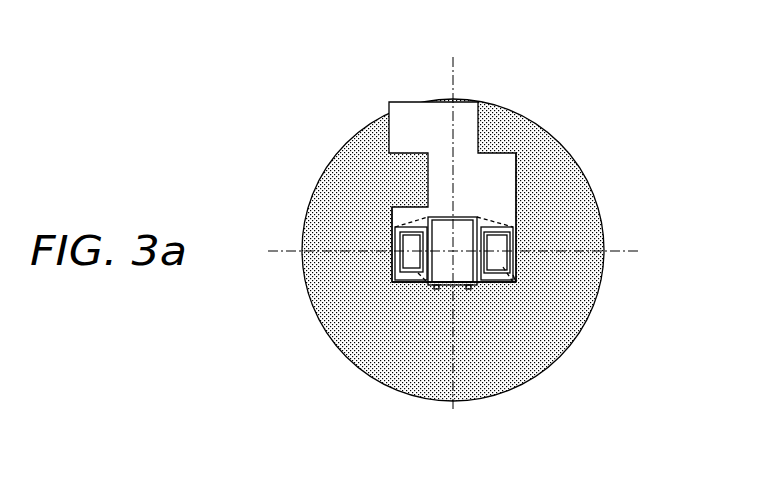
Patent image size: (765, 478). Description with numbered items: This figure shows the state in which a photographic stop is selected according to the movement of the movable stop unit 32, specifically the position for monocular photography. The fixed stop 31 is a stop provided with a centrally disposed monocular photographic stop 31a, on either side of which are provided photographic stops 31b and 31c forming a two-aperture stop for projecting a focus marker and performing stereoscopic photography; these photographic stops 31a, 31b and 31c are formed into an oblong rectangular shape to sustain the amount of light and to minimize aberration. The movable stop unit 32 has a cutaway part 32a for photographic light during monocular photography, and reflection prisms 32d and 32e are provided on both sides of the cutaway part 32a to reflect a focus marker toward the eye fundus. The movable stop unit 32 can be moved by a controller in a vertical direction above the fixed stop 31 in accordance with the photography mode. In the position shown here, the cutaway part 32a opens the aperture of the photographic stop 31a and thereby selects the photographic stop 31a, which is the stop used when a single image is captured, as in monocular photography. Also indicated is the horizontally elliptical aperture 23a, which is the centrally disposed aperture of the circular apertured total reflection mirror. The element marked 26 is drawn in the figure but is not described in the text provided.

The fixed stop 31 is at (580, 163).
The monocular photographic stop 31a is at (462, 286).
The photographic stop 31b is at (395, 257).
The photographic stop 31c is at (517, 283).
The movable stop unit 32 is at (416, 102).
The cutaway part 32a is at (433, 284).
The reflection prism 32d is at (393, 226).
The reflection prism 32e is at (516, 226).
The sensor element 26 is at (453, 250).
The horizontally elliptical aperture 23a is at (490, 220).